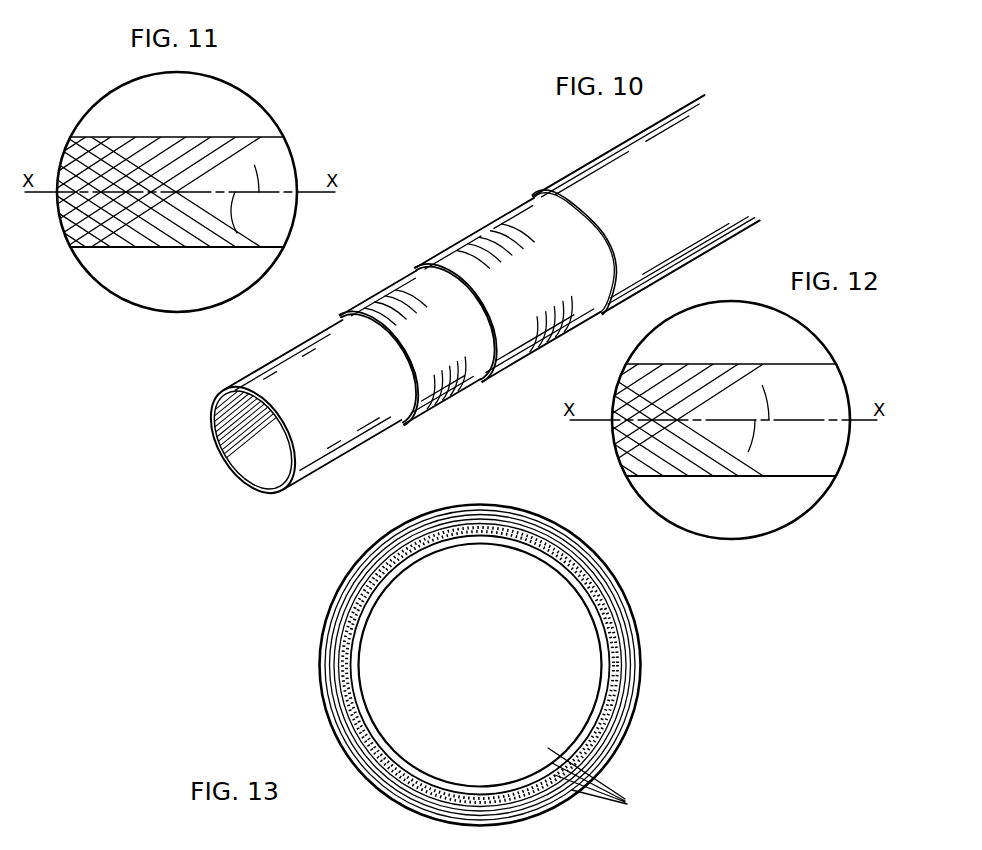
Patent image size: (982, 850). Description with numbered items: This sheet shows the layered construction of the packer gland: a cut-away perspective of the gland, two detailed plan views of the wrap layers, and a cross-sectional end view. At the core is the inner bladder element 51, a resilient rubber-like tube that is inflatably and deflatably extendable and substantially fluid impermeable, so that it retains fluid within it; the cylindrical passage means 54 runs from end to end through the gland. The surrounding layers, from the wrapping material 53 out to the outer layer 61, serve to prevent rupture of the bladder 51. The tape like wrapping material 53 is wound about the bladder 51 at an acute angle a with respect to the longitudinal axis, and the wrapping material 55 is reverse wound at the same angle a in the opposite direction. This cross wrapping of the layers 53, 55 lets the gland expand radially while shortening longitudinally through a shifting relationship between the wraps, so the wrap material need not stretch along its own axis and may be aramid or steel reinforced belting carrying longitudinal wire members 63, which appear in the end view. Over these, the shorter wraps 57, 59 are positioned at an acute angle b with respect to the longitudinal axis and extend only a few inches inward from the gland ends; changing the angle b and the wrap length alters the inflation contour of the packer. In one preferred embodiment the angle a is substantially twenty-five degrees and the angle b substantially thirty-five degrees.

In FIG. 10, the inner bladder element 51 is at (270, 497).
In FIG. 13, the inner bladder element 51 is at (580, 733).
In FIG. 11, the tape like wrapping material 53 is at (159, 162).
In FIG. 10, the tape like wrapping material 53 is at (428, 406).
In FIG. 13, the tape like wrapping material 53 is at (608, 633).
In FIG. 10, the cylindrical passage means 54 is at (240, 448).
In FIG. 13, the cylindrical passage means 54 is at (483, 650).
In FIG. 11, the wrapping material 55 is at (152, 215).
In FIG. 10, the wrapping material 55 is at (457, 417).
In FIG. 13, the wrapping material 55 is at (618, 647).
In FIG. 12, the wrap 57 is at (640, 390).
In FIG. 10, the wrap 57 is at (541, 344).
In FIG. 13, the wrap 57 is at (622, 658).
In FIG. 12, the wrap 59 is at (630, 450).
In FIG. 10, the wrap 59 is at (551, 359).
In FIG. 13, the wrap 59 is at (623, 687).
In FIG. 10, the outer layer 61 is at (593, 180).
In FIG. 13, the outer layer 61 is at (623, 713).
In FIG. 13, the longitudinal wire members 63 is at (599, 781).
In FIG. 11, the acute angle a is at (286, 188).
In FIG. 12, the acute angle b is at (815, 410).